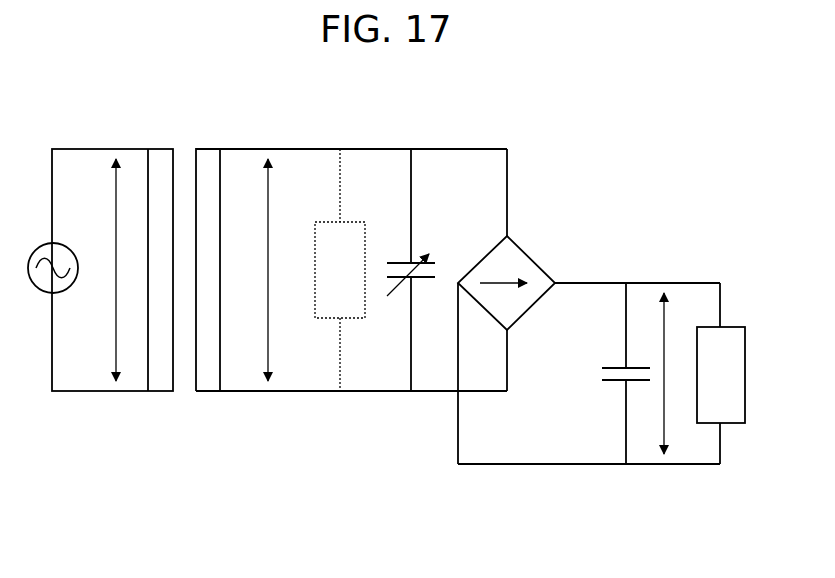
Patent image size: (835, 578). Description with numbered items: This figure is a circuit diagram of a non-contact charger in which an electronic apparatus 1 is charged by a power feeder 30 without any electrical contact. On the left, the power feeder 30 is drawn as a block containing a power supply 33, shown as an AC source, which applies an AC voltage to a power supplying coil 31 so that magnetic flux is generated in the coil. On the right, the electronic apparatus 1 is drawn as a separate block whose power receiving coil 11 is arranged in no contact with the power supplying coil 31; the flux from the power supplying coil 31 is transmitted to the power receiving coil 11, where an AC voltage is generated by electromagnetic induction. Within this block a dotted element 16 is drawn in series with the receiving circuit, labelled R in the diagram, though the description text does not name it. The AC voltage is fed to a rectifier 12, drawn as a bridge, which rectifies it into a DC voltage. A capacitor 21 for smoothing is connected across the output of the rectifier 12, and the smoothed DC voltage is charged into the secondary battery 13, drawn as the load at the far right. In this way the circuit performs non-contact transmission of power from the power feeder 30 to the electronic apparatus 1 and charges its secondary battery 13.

The electronic apparatus 1 is at (496, 323).
The power receiving coil 11 is at (212, 148).
The rectifier 12 is at (538, 258).
The secondary battery 13 is at (746, 375).
The resistance component 16 is at (352, 222).
The capacitor for smoothing 21 is at (614, 383).
The power feeder 30 is at (97, 298).
The power supplying coil 31 is at (164, 148).
The power supply 33 is at (50, 244).